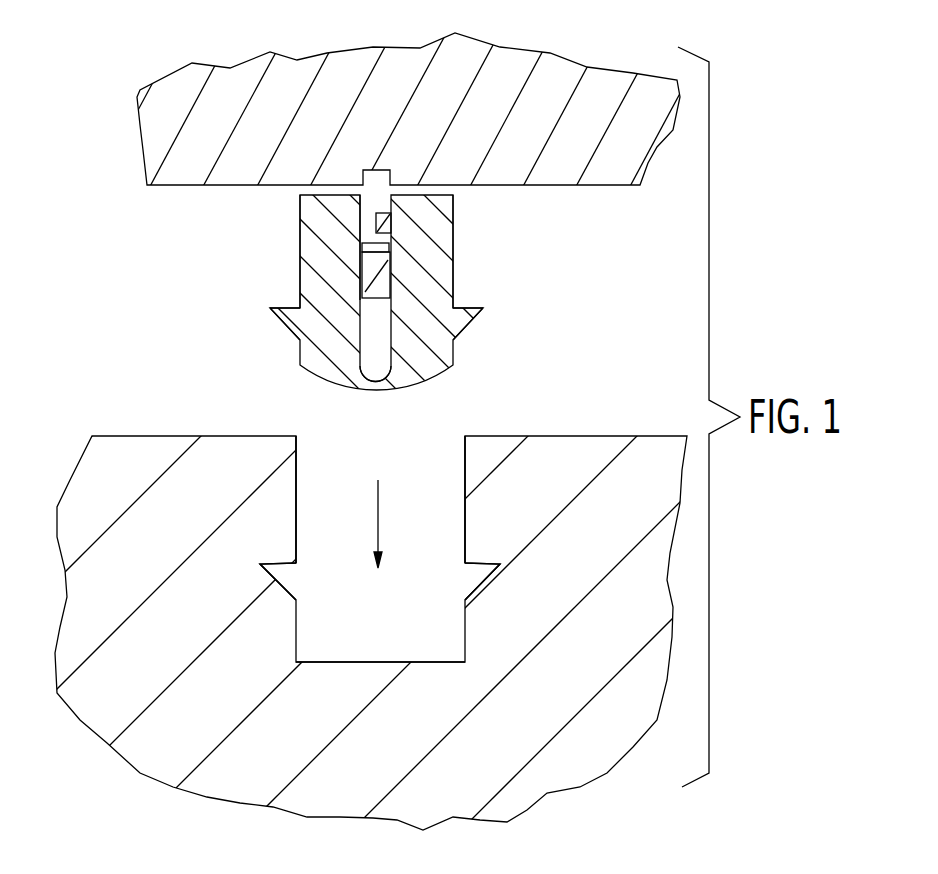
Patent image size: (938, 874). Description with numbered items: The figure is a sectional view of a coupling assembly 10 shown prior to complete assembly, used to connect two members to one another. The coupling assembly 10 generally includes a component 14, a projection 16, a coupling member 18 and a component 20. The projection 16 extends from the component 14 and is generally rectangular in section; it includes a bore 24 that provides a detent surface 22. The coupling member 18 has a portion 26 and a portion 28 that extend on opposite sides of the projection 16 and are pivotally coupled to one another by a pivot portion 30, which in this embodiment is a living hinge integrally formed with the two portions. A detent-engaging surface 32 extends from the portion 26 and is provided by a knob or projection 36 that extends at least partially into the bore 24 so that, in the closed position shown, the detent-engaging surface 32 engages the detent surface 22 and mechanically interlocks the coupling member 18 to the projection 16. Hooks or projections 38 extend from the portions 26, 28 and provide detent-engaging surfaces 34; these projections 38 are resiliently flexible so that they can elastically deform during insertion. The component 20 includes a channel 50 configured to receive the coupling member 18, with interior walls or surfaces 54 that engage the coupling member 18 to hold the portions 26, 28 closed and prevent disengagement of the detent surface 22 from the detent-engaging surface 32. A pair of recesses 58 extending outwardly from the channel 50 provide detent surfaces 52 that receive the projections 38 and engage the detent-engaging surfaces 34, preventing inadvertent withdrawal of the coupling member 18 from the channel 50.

The coupling assembly 10 is at (98, 80).
The component 14 is at (603, 188).
The projection 16 is at (383, 284).
The coupling member 18 is at (457, 353).
The component 20 is at (575, 435).
The detent surface 22 is at (380, 237).
The bore 24 is at (362, 270).
The portion 26 is at (298, 204).
The portion 28 is at (455, 206).
The pivot portion 30 is at (378, 393).
The detent-engaging surface 32 is at (391, 244).
The detent-engaging surface 34 is at (270, 307).
The knob or projection 36 is at (372, 247).
The hook or projection 38 is at (282, 322).
The channel 50 is at (297, 499).
The detent surface 52 is at (280, 568).
The interior wall 54 is at (297, 546).
The recess 58 is at (280, 590).